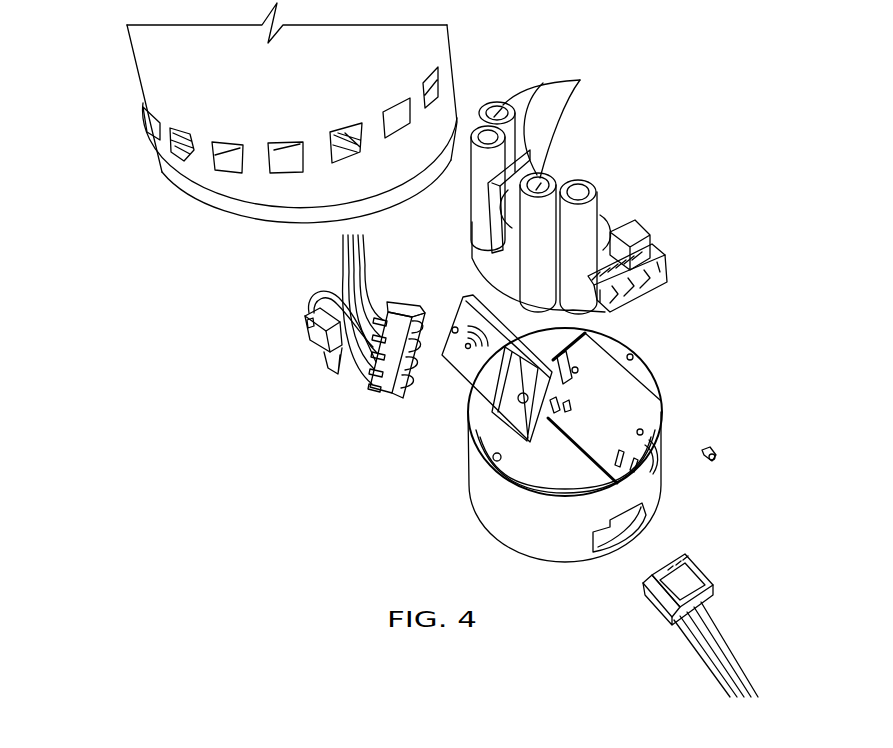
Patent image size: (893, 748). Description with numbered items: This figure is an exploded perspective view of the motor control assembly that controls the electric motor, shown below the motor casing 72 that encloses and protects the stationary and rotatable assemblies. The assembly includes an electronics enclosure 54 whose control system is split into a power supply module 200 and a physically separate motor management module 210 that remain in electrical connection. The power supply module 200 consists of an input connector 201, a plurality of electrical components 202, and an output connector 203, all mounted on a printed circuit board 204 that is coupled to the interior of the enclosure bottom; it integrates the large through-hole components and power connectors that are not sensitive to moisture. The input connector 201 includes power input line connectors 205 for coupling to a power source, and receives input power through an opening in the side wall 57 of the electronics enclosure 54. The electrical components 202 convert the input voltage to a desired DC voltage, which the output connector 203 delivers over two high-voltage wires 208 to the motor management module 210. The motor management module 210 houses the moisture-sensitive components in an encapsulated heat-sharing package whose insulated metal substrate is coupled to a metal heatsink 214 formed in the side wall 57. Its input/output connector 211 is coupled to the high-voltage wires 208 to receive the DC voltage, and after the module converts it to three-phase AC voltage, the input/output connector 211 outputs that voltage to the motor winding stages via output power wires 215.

The casing 72 is at (138, 83).
The output power wires 215 is at (370, 254).
The high-voltage wires 208 is at (358, 362).
The output connector 203 is at (310, 328).
The input/output connector 211 is at (380, 385).
The motor management module 210 is at (473, 367).
The metal heatsink 214 is at (623, 393).
The electronics enclosure 54 is at (474, 486).
The side wall 57 is at (527, 523).
The power supply module 200 is at (579, 191).
The printed circuit board 204 is at (503, 262).
The electrical components 202 is at (580, 80).
The input connector 201 is at (657, 249).
The power input line connectors 205 is at (712, 628).